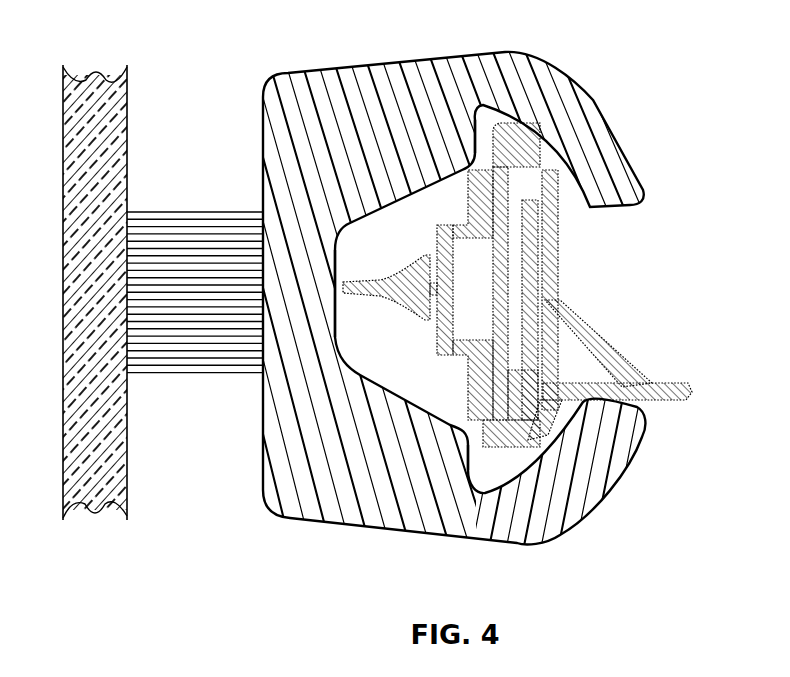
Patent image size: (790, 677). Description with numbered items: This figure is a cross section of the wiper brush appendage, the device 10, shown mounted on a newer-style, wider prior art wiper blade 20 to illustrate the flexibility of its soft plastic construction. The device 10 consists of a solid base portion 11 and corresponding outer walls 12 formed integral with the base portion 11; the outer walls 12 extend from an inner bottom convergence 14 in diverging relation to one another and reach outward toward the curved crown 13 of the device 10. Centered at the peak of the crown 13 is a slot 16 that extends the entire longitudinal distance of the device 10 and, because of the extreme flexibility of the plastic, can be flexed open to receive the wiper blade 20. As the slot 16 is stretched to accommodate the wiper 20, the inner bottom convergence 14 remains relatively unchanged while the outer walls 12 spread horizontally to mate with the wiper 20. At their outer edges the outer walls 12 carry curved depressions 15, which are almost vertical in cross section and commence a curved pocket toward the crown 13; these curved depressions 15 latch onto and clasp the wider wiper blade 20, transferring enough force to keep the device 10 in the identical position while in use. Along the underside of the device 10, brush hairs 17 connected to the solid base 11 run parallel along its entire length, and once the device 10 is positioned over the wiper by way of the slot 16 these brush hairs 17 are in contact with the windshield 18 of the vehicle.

The device 10 is at (462, 288).
The solid base portion 11 is at (462, 300).
The outer walls 12 is at (462, 294).
The crown 13 is at (613, 120).
The inner bottom convergence 14 is at (335, 312).
The curved depressions 15 is at (483, 103).
The slot 16 is at (517, 285).
The brush hairs 17 is at (163, 355).
The windshield 18 is at (112, 150).
The wiper blade 20 is at (534, 257).